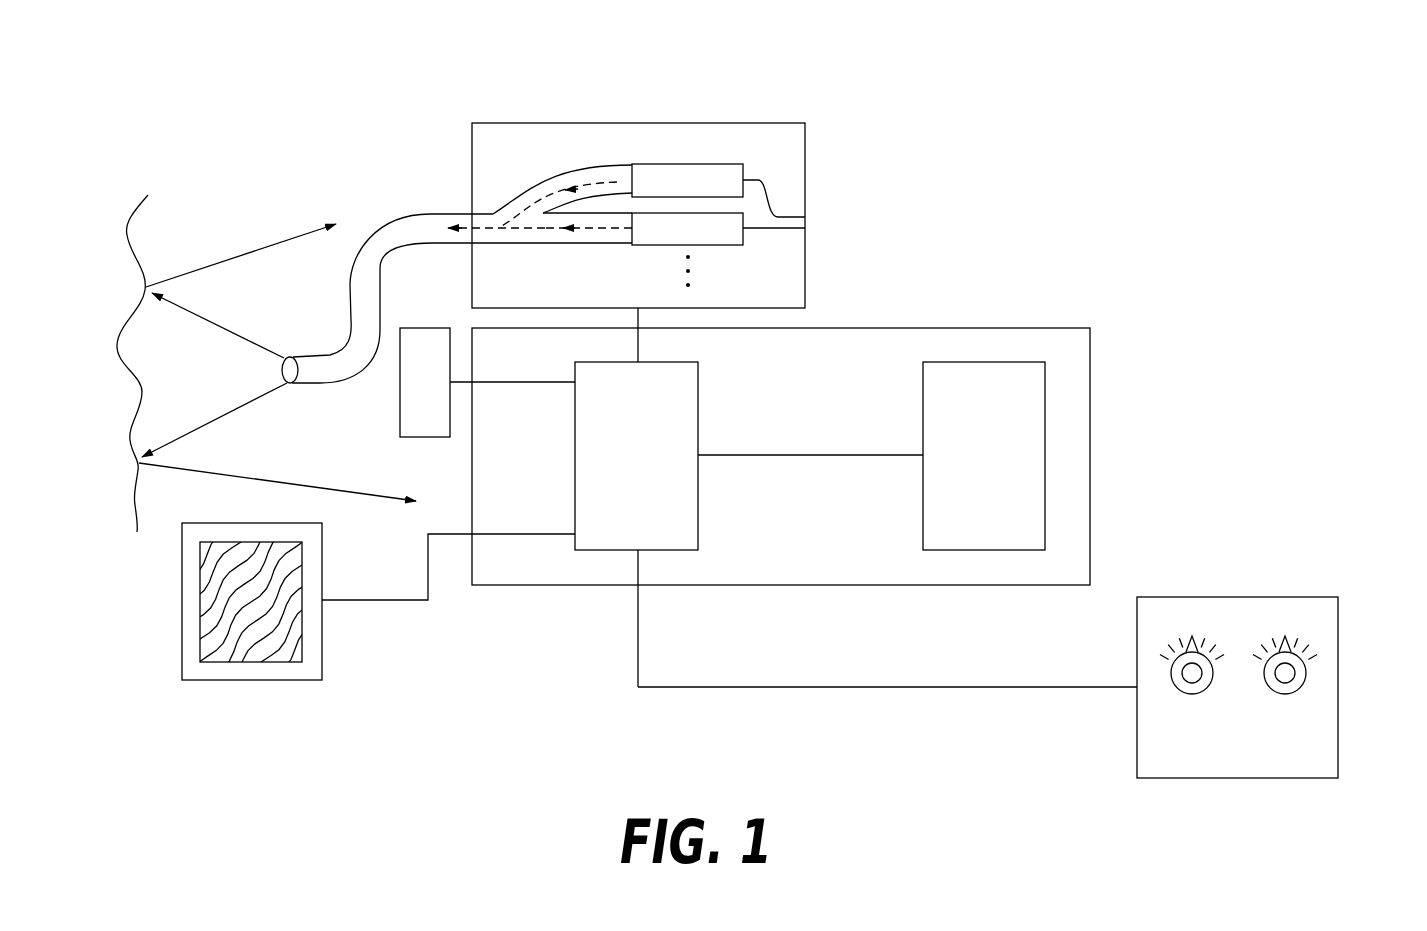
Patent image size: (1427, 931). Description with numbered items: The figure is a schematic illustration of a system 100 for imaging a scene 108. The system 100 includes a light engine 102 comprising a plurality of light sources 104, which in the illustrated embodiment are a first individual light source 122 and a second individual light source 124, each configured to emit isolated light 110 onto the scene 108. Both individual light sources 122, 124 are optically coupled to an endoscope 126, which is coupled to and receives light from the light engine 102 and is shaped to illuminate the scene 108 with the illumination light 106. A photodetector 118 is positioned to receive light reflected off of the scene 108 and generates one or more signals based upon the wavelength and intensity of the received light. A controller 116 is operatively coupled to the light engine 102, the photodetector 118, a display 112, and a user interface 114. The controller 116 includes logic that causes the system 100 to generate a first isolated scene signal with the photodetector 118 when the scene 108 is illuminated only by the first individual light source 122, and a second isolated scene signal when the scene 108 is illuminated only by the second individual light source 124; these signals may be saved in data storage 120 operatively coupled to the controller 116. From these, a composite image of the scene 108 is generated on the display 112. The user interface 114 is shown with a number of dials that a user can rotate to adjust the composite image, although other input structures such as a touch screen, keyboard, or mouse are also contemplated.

The system 100 is at (964, 246).
The light engine 102 is at (742, 122).
The light sources 104 is at (716, 179).
The illumination light 106 is at (419, 265).
The scene 108 is at (153, 247).
The isolated light 110 is at (588, 182).
The display 112 is at (181, 615).
The user interface 114 is at (1340, 677).
The controller 116 is at (698, 400).
The photodetector 118 is at (398, 397).
The data storage 120 is at (923, 403).
The first individual light source 122 is at (744, 166).
The second individual light source 124 is at (733, 246).
The endoscope 126 is at (344, 304).